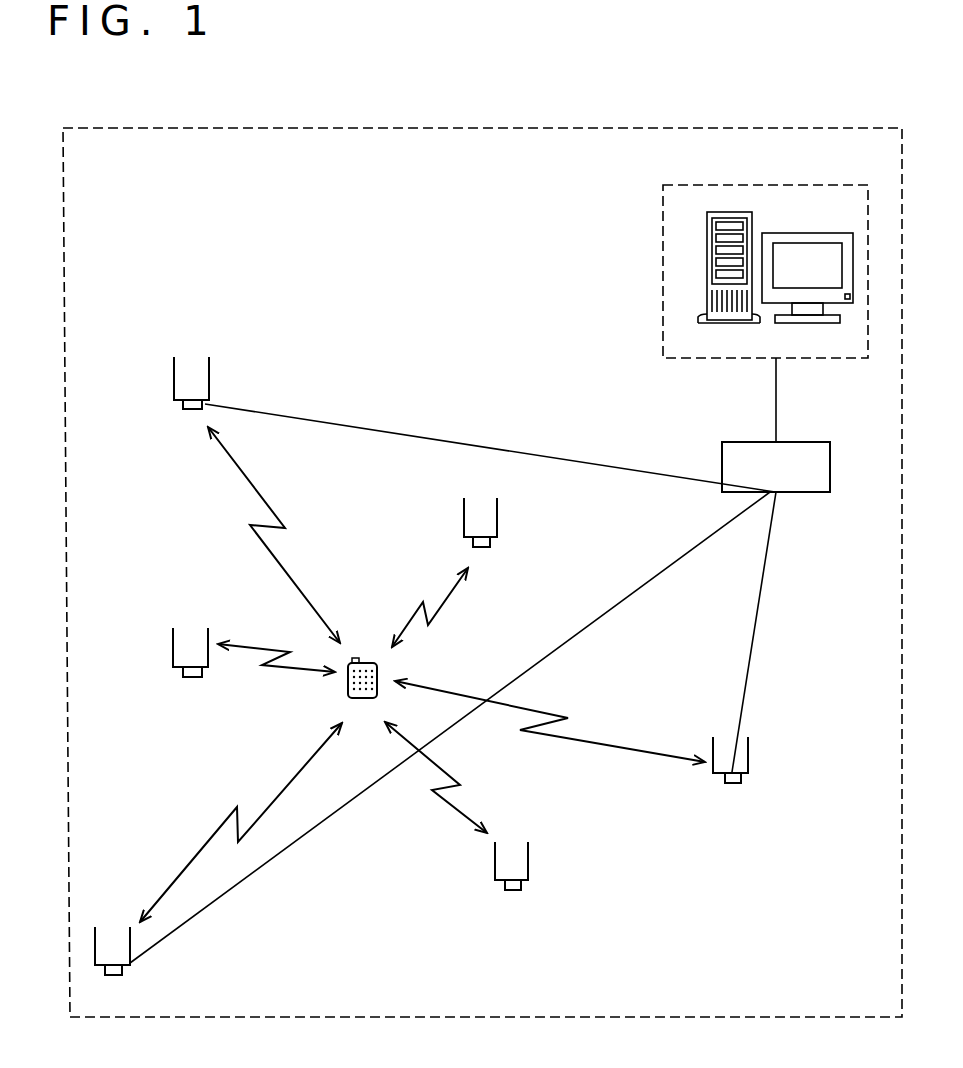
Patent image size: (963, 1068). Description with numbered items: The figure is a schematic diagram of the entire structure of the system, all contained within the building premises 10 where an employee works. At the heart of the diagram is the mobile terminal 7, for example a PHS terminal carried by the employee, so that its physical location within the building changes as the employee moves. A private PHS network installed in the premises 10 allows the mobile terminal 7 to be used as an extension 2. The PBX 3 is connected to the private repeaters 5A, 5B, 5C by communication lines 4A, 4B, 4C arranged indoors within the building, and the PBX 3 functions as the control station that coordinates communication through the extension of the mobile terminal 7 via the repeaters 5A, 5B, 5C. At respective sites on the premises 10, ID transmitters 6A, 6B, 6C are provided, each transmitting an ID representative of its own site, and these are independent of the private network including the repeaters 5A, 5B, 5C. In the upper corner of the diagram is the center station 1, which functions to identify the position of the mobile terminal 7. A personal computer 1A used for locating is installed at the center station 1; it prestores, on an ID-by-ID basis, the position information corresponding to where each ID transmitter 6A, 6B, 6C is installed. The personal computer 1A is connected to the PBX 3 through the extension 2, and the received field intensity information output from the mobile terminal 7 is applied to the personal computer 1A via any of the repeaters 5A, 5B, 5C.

The building premises 10 is at (528, 128).
The center station 1 is at (663, 224).
The personal computer 1A is at (795, 237).
The extension 2 is at (775, 405).
The PBX 3 is at (815, 442).
The communication line 4A is at (565, 460).
The communication line 4B is at (633, 598).
The communication line 4C is at (750, 652).
The private repeater 5A is at (191, 401).
The private repeater 5B is at (112, 968).
The private repeater 5C is at (732, 777).
The ID transmitter 6A is at (485, 541).
The ID transmitter 6B is at (190, 670).
The ID transmitter 6C is at (513, 882).
The mobile terminal 7 is at (362, 693).